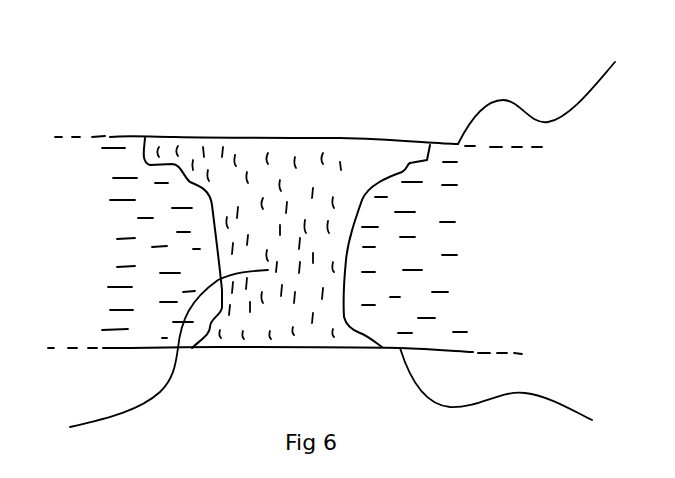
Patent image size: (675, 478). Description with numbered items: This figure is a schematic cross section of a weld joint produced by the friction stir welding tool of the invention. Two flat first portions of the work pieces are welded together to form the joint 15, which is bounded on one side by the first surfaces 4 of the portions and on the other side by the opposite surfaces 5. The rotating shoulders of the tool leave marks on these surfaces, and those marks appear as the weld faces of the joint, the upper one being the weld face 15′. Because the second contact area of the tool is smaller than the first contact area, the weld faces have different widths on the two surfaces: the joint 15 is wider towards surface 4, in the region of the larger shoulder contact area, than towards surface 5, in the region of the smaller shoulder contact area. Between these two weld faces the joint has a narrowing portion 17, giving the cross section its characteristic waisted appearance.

The joint 15 is at (332, 121).
The weld face 15′ is at (173, 133).
The first surfaces of first portions 4 is at (547, 91).
The opposite surfaces of first portions 5 is at (507, 394).
The narrowing portion 17 is at (147, 359).